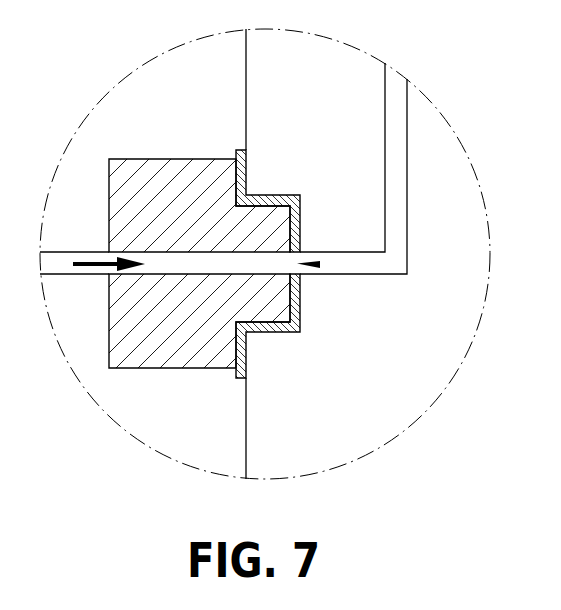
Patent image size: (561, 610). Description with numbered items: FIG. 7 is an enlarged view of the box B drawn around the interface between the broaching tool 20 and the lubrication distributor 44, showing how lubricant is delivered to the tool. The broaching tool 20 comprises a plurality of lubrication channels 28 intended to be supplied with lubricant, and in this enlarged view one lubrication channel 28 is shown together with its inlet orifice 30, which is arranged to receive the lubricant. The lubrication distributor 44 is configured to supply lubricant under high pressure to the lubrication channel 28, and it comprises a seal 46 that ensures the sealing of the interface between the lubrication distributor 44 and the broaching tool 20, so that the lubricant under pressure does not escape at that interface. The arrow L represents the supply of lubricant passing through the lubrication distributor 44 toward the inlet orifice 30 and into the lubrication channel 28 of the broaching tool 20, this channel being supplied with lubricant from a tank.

The broaching tool 20 is at (328, 97).
The lubrication channel 28 is at (397, 127).
The inlet orifice 30 is at (320, 266).
The lubrication distributor 44 is at (122, 376).
The seal 46 is at (218, 144).
The box B is at (459, 146).
The arrow L is at (90, 270).